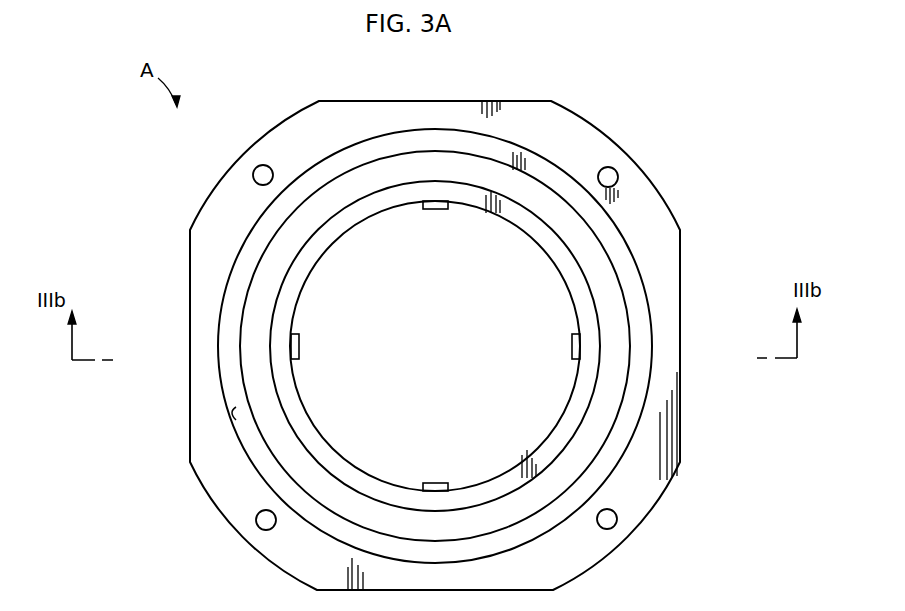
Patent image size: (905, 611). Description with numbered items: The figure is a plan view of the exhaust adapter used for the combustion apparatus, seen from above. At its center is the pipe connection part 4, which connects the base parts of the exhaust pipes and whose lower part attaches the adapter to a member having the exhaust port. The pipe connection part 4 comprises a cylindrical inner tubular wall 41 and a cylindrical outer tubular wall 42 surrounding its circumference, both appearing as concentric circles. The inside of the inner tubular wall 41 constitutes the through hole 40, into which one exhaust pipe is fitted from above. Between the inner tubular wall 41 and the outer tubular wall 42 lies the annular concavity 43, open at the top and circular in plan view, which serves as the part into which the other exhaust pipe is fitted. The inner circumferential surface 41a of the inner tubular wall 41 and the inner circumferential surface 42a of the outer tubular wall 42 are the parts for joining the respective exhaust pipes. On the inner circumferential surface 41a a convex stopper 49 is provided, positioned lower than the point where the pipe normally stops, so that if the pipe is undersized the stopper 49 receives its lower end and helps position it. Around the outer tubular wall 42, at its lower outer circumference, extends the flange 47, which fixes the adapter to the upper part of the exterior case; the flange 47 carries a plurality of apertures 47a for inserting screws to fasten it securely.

The pipe connection part 4 is at (361, 142).
The through hole 40 is at (538, 310).
The inner tubular wall 41 is at (292, 397).
The inner circumferential surface 41a is at (327, 440).
The outer tubular wall 42 is at (232, 395).
The inner circumferential surface 42a is at (235, 427).
The annular concavity 43 is at (270, 437).
The flange 47 is at (658, 215).
The apertures 47a is at (263, 174).
The convex stopper 49 is at (427, 211).